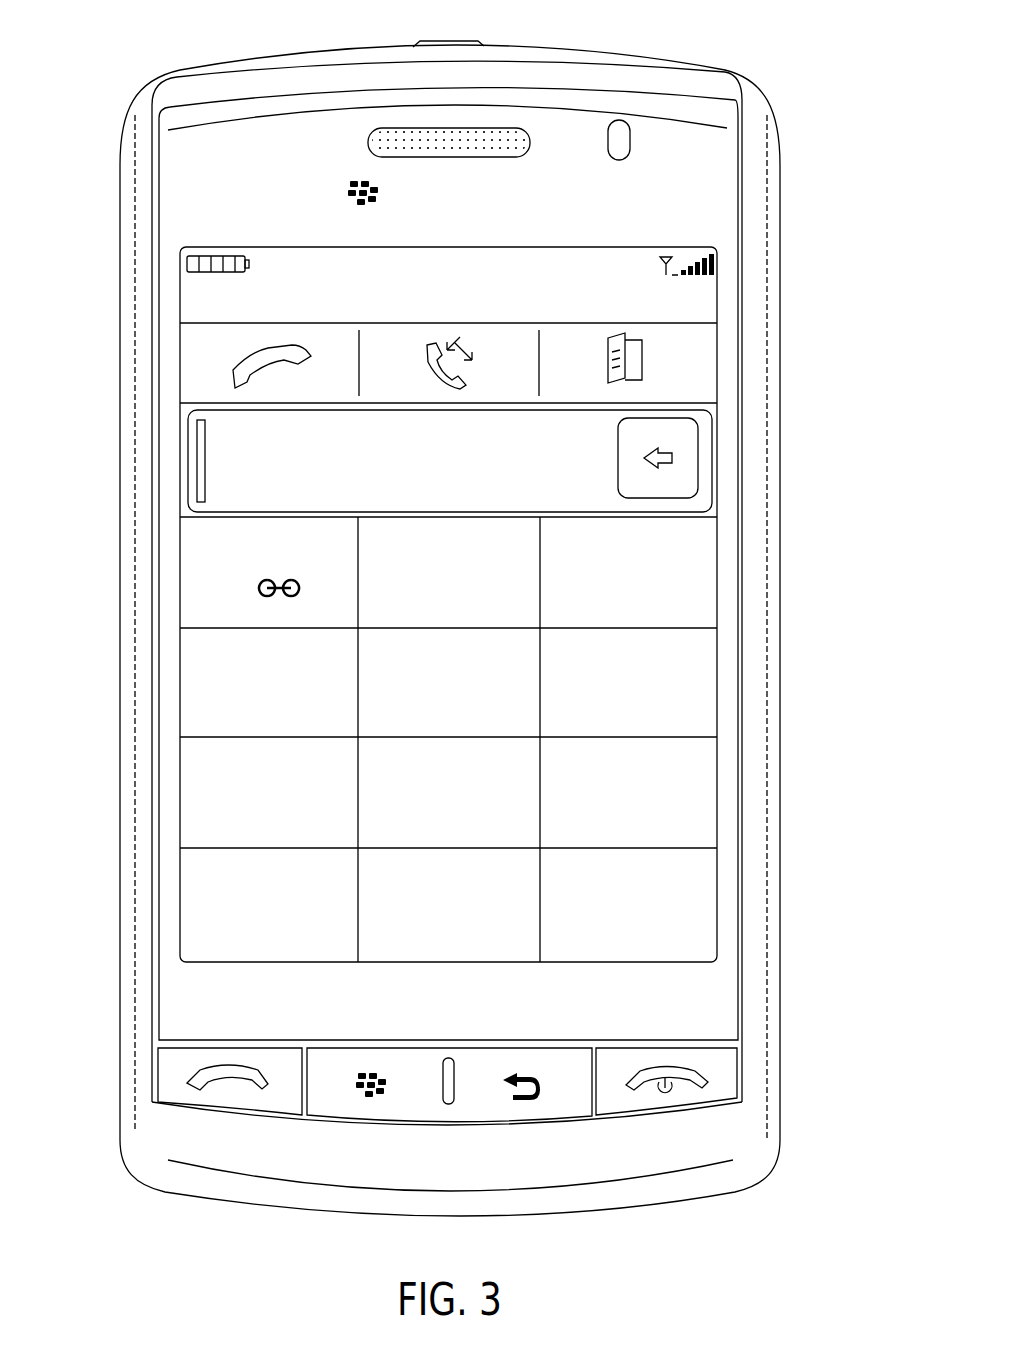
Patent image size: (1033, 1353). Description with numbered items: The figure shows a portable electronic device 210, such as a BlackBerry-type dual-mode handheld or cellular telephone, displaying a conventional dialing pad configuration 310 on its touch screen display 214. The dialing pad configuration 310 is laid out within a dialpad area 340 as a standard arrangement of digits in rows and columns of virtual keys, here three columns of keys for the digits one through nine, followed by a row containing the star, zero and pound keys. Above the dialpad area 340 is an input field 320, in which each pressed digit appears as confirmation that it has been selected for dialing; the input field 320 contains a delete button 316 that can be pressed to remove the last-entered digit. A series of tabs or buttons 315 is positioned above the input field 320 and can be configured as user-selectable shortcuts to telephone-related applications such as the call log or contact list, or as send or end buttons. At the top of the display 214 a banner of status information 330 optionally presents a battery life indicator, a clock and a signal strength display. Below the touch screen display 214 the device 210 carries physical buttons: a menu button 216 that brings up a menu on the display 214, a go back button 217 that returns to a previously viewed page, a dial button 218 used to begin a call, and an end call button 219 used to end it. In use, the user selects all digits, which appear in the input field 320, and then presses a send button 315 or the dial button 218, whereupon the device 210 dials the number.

The portable electronic device 210 is at (690, 64).
The touch screen display 214 is at (720, 424).
The menu button 216 is at (378, 1057).
The go back button 217 is at (520, 1057).
The dial button 218 is at (235, 1057).
The end call button 219 is at (662, 1057).
The dialing pad configuration 310 is at (178, 534).
The tabs or buttons 315 is at (193, 373).
The delete button 316 is at (690, 460).
The input field 320 is at (230, 468).
The banner of status information 330 is at (717, 263).
The dialpad area 340 is at (98, 961).